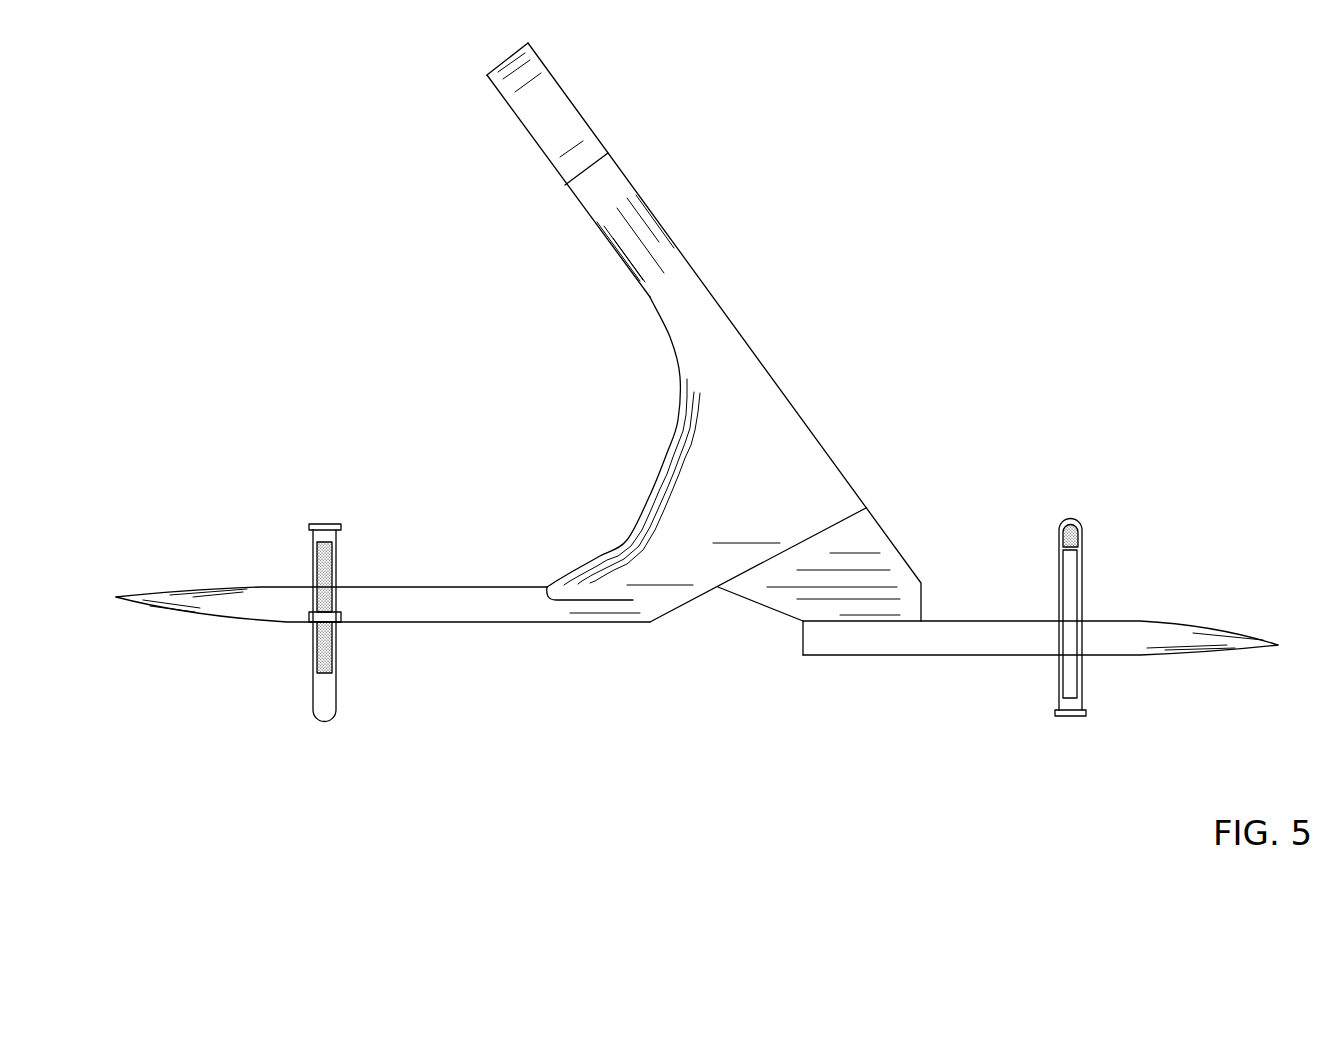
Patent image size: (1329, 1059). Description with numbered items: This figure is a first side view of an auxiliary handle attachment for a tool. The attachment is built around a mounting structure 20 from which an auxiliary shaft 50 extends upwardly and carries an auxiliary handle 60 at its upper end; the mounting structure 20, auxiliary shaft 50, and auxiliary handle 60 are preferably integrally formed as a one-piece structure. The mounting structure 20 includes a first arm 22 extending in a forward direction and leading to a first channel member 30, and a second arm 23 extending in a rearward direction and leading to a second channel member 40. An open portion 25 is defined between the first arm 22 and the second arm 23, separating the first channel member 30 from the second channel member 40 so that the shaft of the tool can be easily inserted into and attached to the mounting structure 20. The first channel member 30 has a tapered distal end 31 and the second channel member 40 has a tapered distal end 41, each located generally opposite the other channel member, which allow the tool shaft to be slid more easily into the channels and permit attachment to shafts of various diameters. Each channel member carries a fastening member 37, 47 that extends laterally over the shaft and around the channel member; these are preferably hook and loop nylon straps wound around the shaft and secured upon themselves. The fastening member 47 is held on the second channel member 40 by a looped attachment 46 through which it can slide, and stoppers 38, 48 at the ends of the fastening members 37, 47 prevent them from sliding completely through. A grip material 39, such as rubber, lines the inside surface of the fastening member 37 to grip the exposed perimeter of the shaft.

The mounting structure 20 is at (692, 387).
The first arm 22 is at (890, 540).
The second arm 23 is at (547, 585).
The open portion 25 is at (733, 622).
The first channel member 30 is at (1057, 646).
The tapered distal end 31 is at (1263, 637).
The fastening member 37 is at (1082, 533).
The stopper 38 is at (1070, 716).
The grip material 39 is at (1083, 642).
The second channel member 40 is at (365, 566).
The tapered distal end 41 is at (125, 603).
The looped attachment 46 is at (389, 584).
The fastening member 47 is at (335, 522).
The stopper 48 is at (337, 688).
The auxiliary shaft 50 is at (668, 235).
The auxiliary handle 60 is at (505, 53).